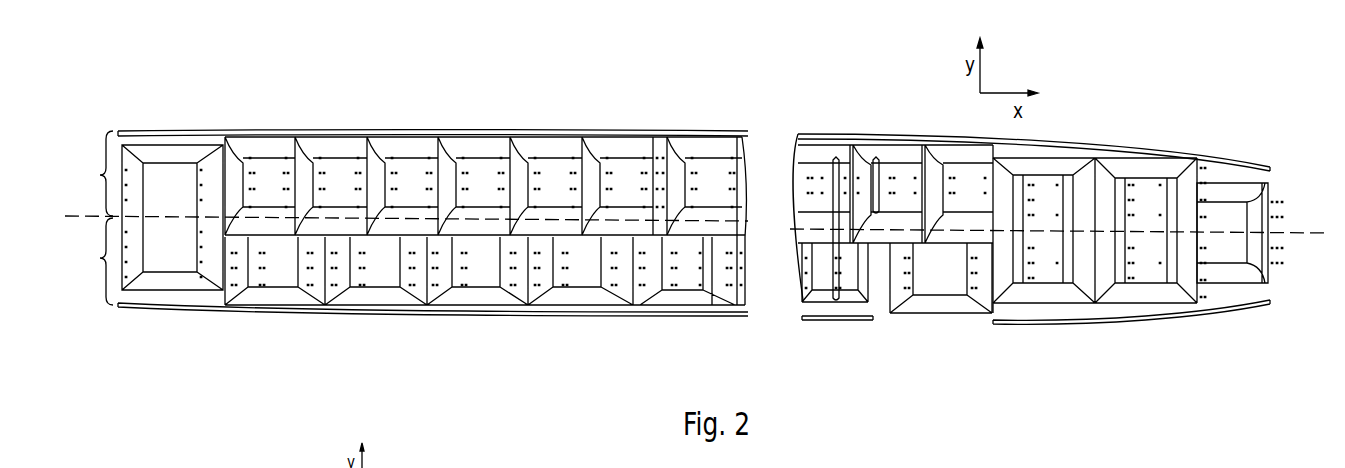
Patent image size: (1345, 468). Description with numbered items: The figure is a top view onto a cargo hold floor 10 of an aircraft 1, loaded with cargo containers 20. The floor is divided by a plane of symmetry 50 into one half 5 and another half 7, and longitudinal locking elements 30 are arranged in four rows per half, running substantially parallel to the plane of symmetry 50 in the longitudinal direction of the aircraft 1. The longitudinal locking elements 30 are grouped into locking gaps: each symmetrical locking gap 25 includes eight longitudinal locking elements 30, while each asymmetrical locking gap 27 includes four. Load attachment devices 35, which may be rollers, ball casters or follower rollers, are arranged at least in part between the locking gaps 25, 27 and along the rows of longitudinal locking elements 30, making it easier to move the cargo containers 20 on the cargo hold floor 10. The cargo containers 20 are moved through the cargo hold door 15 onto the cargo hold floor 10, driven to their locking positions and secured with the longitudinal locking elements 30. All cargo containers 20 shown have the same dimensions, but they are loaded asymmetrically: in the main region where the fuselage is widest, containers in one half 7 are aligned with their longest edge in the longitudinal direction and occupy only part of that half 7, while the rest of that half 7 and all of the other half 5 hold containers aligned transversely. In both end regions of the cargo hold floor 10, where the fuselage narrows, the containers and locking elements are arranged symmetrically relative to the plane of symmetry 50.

The aircraft 1 is at (612, 126).
The half 5 is at (98, 173).
The half 7 is at (98, 261).
The cargo hold floor 10 is at (662, 140).
The cargo hold door 15 is at (930, 330).
The cargo container 20 is at (178, 147).
The symmetrical locking gap 25 is at (838, 157).
The asymmetrical locking gap 27 is at (877, 157).
The longitudinal locking element 30 is at (658, 338).
The load attachment device 35 is at (357, 157).
The plane of symmetry 50 is at (273, 220).